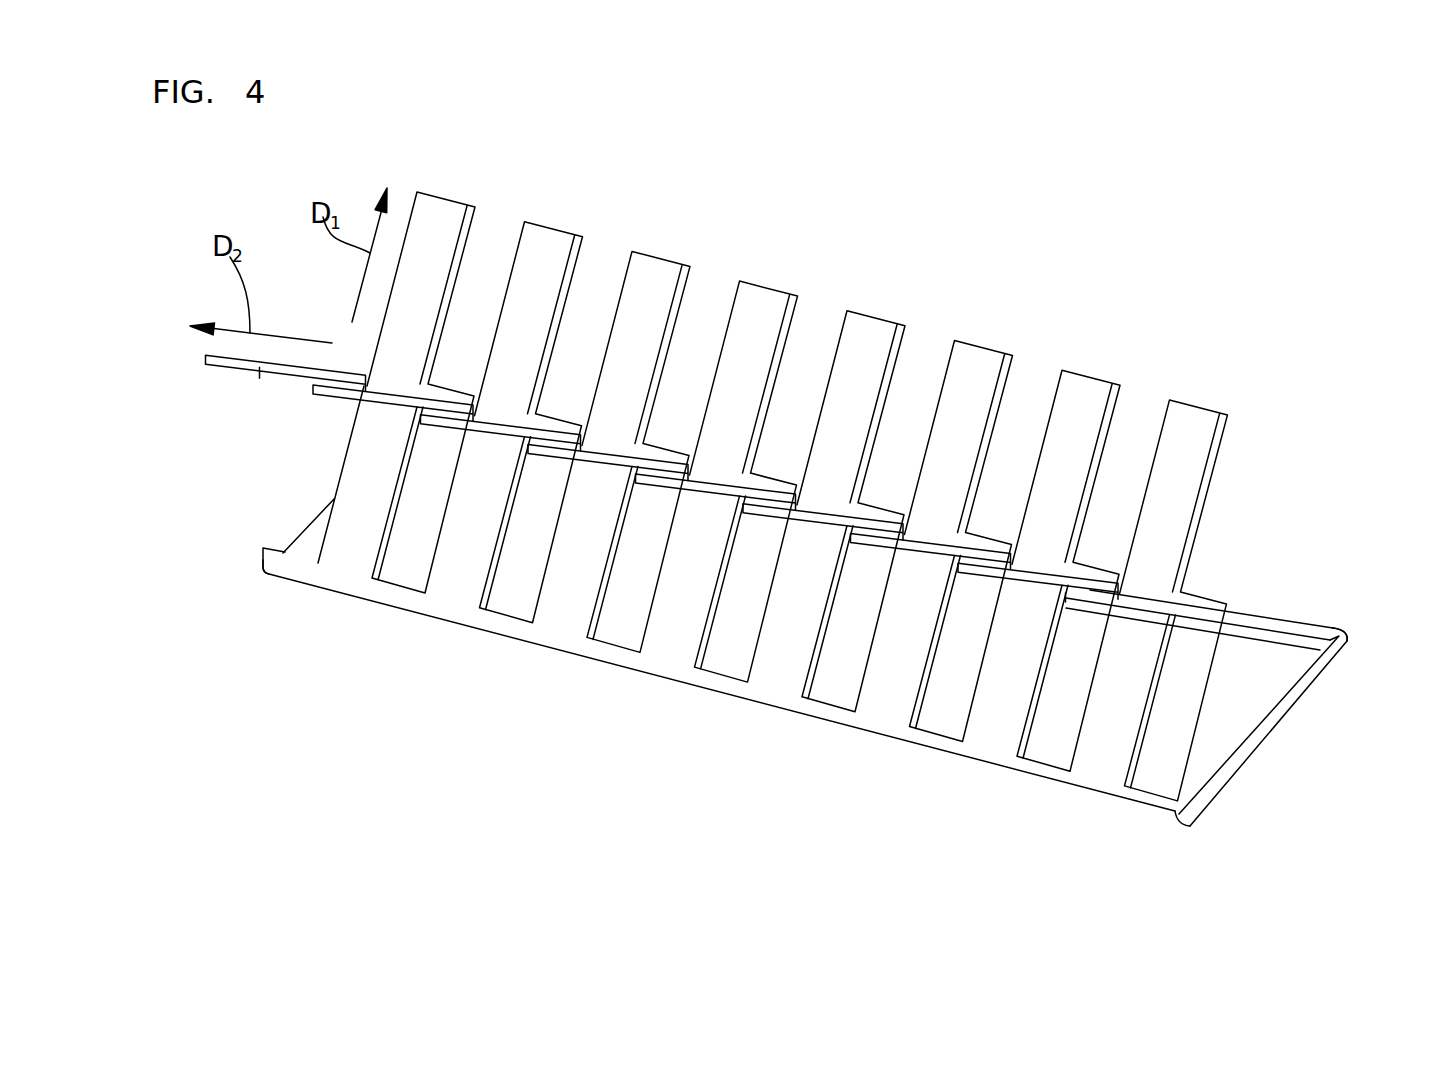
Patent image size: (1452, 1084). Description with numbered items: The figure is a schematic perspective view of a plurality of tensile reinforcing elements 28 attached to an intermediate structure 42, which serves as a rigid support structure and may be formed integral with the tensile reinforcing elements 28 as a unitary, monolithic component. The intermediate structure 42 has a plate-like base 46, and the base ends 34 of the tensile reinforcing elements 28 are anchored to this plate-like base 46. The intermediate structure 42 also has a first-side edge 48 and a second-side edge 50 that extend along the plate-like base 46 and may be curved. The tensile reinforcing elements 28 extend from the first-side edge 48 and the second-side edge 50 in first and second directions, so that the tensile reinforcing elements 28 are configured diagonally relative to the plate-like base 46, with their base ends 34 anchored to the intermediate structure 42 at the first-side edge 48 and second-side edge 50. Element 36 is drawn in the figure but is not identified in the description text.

The tensile reinforcing elements 28 is at (437, 237).
The base ends 34 is at (473, 397).
The fin 36 is at (438, 422).
The intermediate structure 42 is at (1260, 806).
The plate-like base 46 is at (313, 535).
The first-side edge 48 is at (1345, 643).
The second-side edge 50 is at (262, 560).